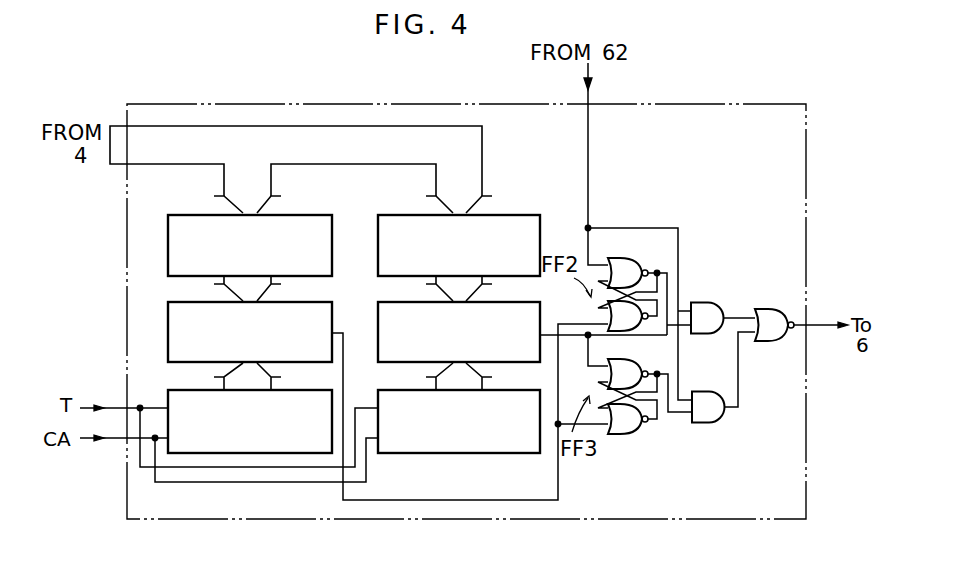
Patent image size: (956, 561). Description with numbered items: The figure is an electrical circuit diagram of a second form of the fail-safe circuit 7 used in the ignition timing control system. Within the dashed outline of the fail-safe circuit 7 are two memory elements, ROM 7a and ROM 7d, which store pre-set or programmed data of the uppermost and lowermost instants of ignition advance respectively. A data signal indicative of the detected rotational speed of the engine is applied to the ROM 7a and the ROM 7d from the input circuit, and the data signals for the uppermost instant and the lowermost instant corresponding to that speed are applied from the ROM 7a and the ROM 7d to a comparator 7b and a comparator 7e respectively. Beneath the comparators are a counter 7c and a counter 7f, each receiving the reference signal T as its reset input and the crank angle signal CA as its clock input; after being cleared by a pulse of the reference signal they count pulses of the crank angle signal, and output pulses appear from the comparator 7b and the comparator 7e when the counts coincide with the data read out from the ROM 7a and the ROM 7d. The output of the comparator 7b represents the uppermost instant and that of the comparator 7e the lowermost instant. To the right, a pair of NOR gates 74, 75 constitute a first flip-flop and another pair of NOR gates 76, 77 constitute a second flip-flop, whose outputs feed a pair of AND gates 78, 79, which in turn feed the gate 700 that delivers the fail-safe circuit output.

The fail-safe circuit 7 is at (806, 178).
The memory element (ROM) 7a is at (300, 215).
The comparator 7b is at (308, 302).
The counter 7c is at (296, 390).
The memory element (ROM) 7d is at (500, 215).
The comparator 7e is at (400, 302).
The counter 7f is at (400, 390).
The NOR gate 74 is at (634, 265).
The NOR gate 75 is at (606, 316).
The NOR gate 76 is at (632, 366).
The NOR gate 77 is at (626, 430).
The AND gate 78 is at (700, 302).
The AND gate 79 is at (716, 420).
The OR gate 700 is at (777, 298).